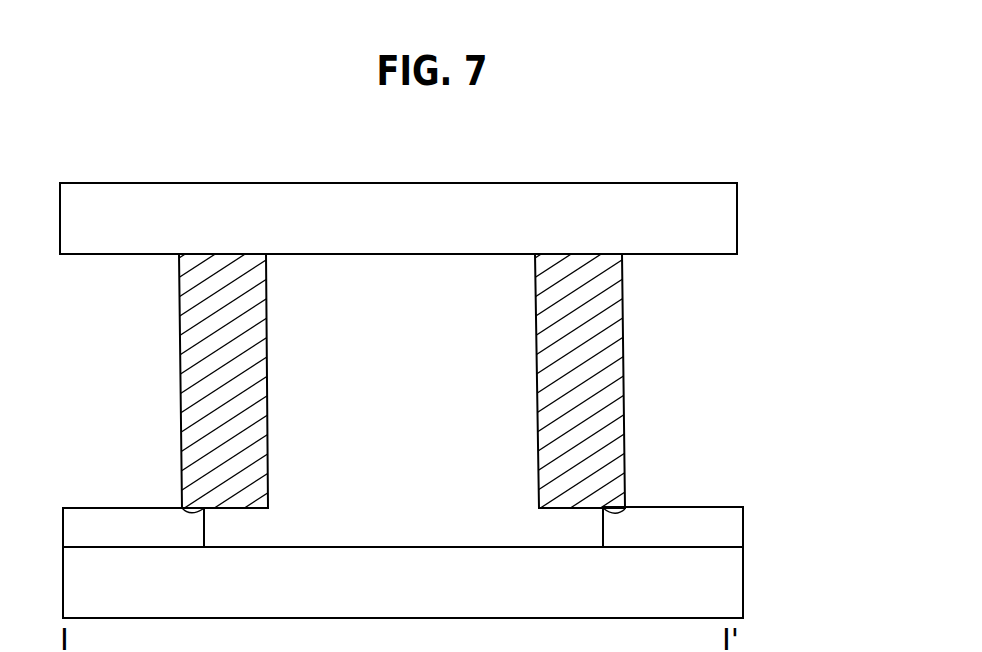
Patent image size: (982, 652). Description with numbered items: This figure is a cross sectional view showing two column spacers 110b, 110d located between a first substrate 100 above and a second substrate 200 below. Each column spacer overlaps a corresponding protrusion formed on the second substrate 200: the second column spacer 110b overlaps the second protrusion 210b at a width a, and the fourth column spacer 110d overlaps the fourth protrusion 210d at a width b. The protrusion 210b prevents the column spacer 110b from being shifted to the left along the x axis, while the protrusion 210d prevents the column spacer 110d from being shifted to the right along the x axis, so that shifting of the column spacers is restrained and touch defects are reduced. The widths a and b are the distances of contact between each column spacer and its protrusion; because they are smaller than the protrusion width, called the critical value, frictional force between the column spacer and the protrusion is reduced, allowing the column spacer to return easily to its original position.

The first substrate 100 is at (718, 215).
The second column spacer 110b is at (243, 383).
The fourth column spacer 110d is at (560, 383).
The second substrate 200 is at (727, 583).
The second protrusion 210b is at (192, 528).
The fourth protrusion 210d is at (603, 528).
The overlap width a is at (196, 511).
The overlap width b is at (614, 515).